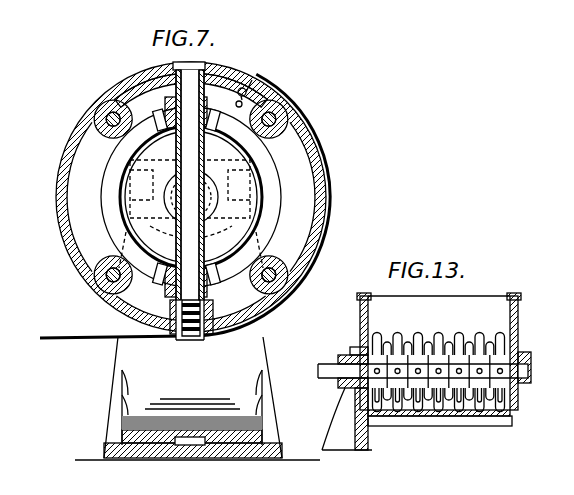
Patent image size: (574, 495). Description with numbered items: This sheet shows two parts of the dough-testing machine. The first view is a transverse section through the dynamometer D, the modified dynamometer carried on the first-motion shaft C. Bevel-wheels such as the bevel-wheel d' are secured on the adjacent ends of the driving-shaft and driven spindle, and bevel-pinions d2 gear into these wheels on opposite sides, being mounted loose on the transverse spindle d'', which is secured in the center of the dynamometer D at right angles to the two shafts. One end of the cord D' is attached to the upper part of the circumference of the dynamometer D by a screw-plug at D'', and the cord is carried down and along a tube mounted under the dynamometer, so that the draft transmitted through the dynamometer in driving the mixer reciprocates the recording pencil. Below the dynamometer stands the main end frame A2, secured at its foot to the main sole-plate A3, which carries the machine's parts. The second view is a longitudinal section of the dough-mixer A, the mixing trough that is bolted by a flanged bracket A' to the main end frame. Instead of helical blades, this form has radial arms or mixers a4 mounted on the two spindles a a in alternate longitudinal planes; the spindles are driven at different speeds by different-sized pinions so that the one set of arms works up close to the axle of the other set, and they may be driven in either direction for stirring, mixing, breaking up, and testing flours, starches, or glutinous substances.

In FIG. 7, the dynamometer D is at (197, 197).
In FIG. 7, the cord D' is at (185, 206).
In FIG. 7, the screw-plug D'' is at (257, 85).
In FIG. 7, the bevel-wheel d' is at (197, 197).
In FIG. 7, the transverse spindle d'' is at (189, 201).
In FIG. 7, the bevel-pinion d2 is at (160, 293).
In FIG. 7, the first-motion shaft C is at (191, 197).
In FIG. 7, the main end frame A2 is at (193, 397).
In FIG. 7, the main sole-plate A3 is at (197, 471).
In FIG. 13, the dough-mixer A is at (444, 359).
In FIG. 13, the flanged bracket A' is at (347, 419).
In FIG. 13, the spindle a is at (330, 366).
In FIG. 13, the radial arms or mixers a4 is at (379, 342).